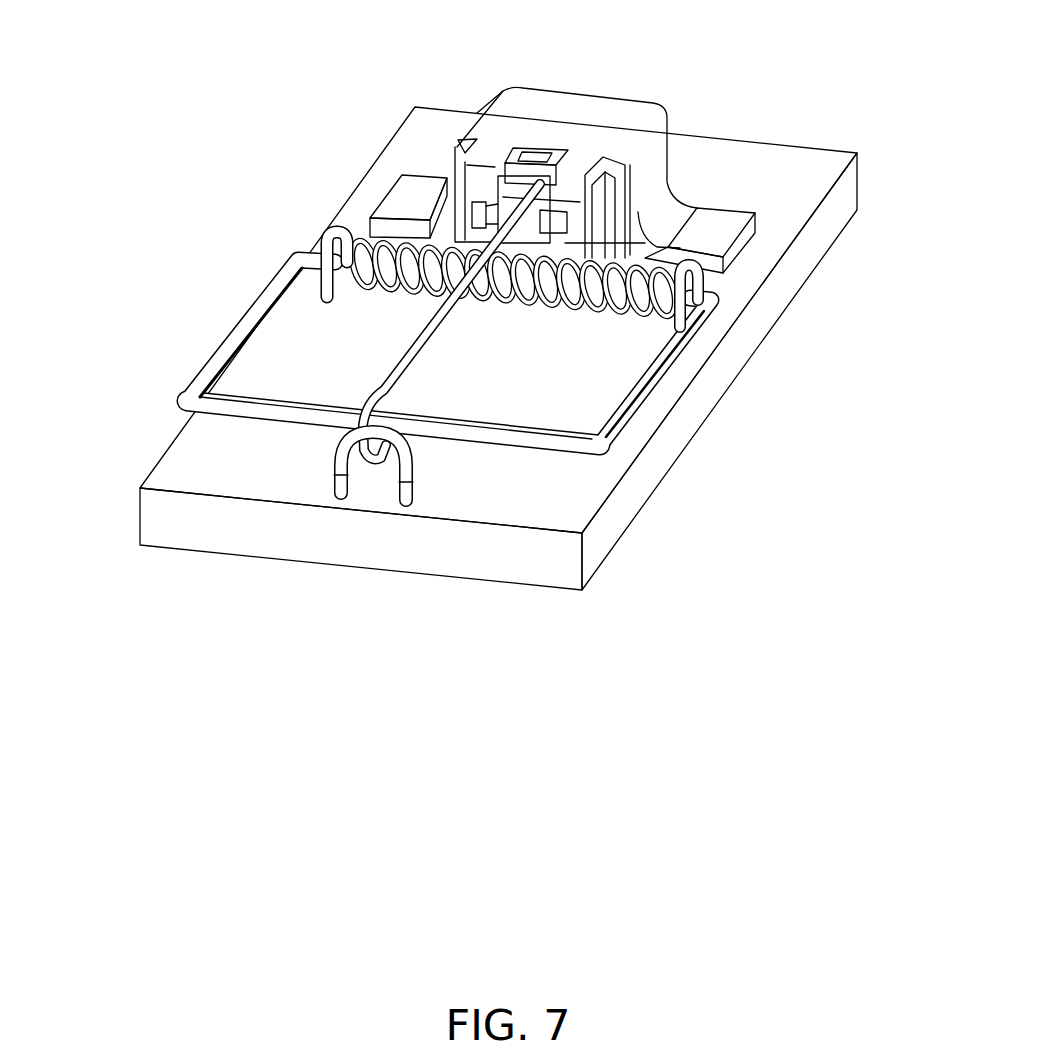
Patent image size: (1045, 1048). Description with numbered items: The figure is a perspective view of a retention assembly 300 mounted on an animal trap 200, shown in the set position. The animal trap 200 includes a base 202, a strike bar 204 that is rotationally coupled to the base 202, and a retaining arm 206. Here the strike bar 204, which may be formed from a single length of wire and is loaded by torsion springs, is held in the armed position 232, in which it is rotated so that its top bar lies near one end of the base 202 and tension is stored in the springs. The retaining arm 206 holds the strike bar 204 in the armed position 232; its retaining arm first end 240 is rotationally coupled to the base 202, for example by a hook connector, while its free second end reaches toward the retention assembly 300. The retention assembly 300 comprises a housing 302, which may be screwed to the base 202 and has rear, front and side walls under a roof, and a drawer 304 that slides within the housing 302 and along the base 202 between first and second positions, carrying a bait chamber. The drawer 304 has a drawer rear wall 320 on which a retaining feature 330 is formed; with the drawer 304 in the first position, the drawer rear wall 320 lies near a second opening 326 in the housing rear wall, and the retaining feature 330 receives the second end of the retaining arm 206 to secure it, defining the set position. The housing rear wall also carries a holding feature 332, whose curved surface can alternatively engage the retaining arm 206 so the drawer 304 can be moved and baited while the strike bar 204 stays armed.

The animal trap 200 is at (490, 335).
The base 202 is at (175, 478).
The strike bar 204 is at (213, 363).
The retaining arm 206 is at (427, 353).
The armed position 232 is at (228, 270).
The retaining arm first end 240 is at (368, 460).
The retention assembly 300 is at (617, 164).
The housing 302 is at (657, 125).
The drawer 304 is at (529, 167).
The drawer rear wall 320 is at (537, 175).
The second opening 326 is at (458, 148).
The retaining feature 330 is at (550, 180).
The holding feature 332 is at (645, 243).